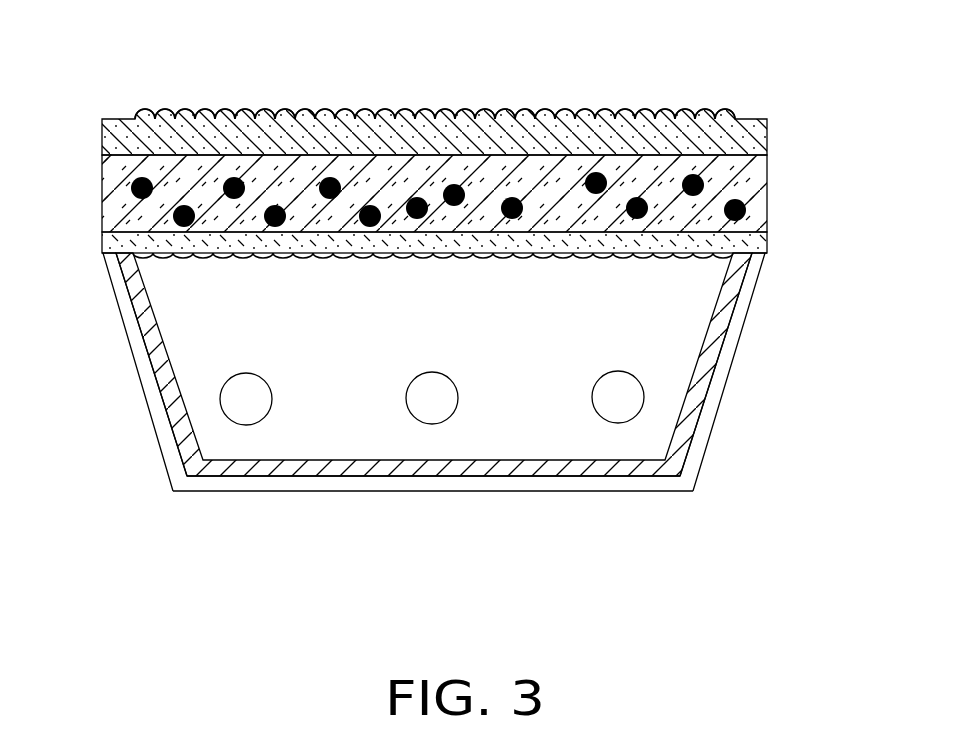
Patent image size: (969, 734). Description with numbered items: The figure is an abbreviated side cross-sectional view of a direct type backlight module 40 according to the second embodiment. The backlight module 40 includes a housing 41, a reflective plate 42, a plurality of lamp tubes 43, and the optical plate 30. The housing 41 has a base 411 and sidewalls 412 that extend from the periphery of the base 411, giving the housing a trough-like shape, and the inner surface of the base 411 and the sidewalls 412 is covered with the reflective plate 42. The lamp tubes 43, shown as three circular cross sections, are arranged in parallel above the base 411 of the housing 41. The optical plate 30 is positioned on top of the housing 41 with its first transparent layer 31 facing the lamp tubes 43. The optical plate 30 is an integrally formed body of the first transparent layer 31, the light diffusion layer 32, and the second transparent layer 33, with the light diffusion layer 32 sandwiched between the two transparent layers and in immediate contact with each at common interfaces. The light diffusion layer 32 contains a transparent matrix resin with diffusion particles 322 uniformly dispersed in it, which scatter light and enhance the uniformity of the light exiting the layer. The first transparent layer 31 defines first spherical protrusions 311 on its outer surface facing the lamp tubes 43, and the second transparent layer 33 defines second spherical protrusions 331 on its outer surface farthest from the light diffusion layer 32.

The direct type backlight module 40 is at (401, 55).
The optical plate 30 is at (830, 125).
The second transparent layer 33 is at (753, 143).
The second spherical protrusions 331 is at (165, 110).
The light diffusion layer 32 is at (750, 194).
The diffusion particles 322 is at (133, 196).
The first transparent layer 31 is at (755, 243).
The first spherical protrusions 311 is at (158, 259).
The housing 41 is at (689, 499).
The base 411 is at (263, 486).
The sidewalls 412 is at (143, 352).
The reflective plate 42 is at (693, 397).
The lamp tubes 43 is at (616, 410).